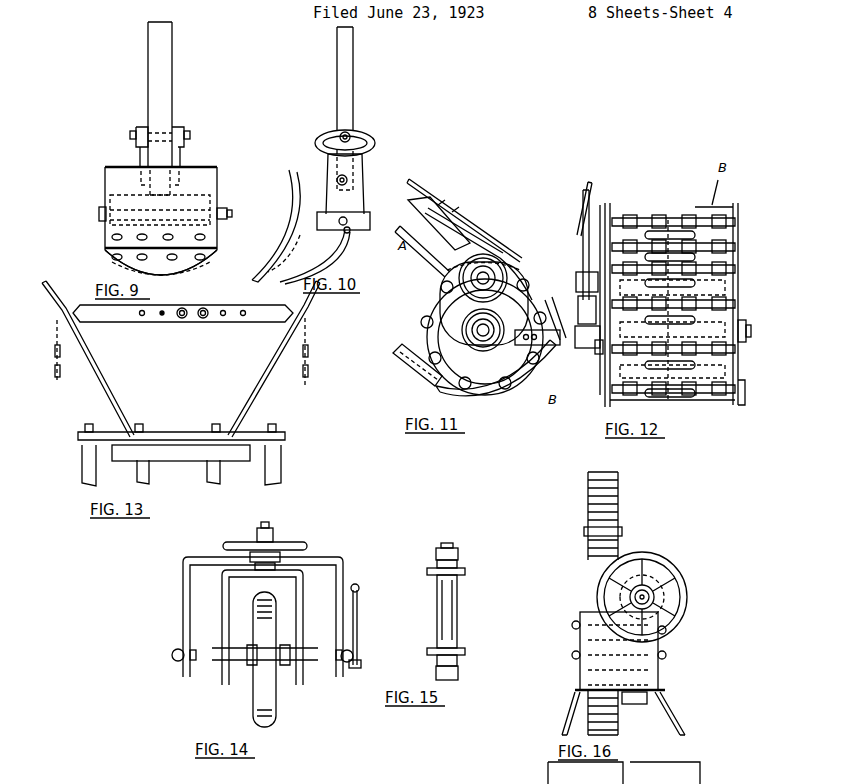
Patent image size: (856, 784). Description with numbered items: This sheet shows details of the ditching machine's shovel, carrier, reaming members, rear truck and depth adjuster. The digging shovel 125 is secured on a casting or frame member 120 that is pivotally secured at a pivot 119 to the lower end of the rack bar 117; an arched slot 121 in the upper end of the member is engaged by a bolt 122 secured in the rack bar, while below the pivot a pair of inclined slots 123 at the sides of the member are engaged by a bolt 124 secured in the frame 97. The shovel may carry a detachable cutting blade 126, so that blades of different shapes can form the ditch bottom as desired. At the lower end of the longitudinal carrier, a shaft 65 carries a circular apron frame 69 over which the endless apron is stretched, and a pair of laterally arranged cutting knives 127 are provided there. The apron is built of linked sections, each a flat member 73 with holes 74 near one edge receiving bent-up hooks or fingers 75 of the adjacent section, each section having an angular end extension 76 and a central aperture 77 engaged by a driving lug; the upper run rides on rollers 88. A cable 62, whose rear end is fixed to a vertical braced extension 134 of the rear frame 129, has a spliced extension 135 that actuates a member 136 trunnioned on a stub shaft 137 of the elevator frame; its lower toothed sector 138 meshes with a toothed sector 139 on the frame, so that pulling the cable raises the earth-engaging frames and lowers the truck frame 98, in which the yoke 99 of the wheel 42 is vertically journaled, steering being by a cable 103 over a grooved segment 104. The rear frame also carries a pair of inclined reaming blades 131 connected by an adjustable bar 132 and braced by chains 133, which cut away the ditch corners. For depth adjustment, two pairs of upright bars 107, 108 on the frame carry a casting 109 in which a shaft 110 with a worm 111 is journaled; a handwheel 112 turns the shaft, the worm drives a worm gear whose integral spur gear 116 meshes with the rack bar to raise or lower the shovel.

In FIG. 9, the rack bar 117 is at (163, 88).
In FIG. 10, the rack bar 117 is at (346, 88).
In FIG. 16, the rack bar 117 is at (608, 512).
In FIG. 9, the casting or frame member 120 is at (181, 156).
In FIG. 10, the casting or frame member 120 is at (360, 192).
In FIG. 9, the bolt 122 is at (190, 135).
In FIG. 10, the bolt 122 is at (350, 135).
In FIG. 9, the pivot 119 is at (199, 171).
In FIG. 10, the pivot 119 is at (347, 179).
In FIG. 9, the digging shovel 125 is at (207, 187).
In FIG. 10, the digging shovel 125 is at (300, 180).
In FIG. 9, the frame 97 is at (100, 222).
In FIG. 10, the frame 97 is at (362, 218).
In FIG. 11, the frame 97 is at (552, 346).
In FIG. 12, the frame 97 is at (598, 352).
In FIG. 14, the frame 97 is at (192, 665).
In FIG. 9, the bolt 124 is at (224, 218).
In FIG. 10, the bolt 124 is at (343, 236).
In FIG. 9, the detachable cutting blade 126 is at (205, 257).
In FIG. 10, the detachable cutting blade 126 is at (270, 270).
In FIG. 10, the arched slot 121 is at (368, 142).
In FIG. 10, the inclined slots 123 is at (346, 225).
In FIG. 10, the angular end extension 76 is at (405, 232).
In FIG. 11, the angular end extension 76 is at (405, 232).
In FIG. 12, the angular end extension 76 is at (738, 210).
In FIG. 11, the circular apron frame 69 is at (445, 337).
In FIG. 12, the circular apron frame 69 is at (742, 320).
In FIG. 11, the stub shaft 137 is at (468, 278).
In FIG. 12, the stub shaft 137 is at (576, 275).
In FIG. 11, the lower toothed sector 138 is at (462, 292).
In FIG. 12, the lower toothed sector 138 is at (578, 300).
In FIG. 13, the lower toothed sector 138 is at (275, 475).
In FIG. 11, the toothed sector 139 is at (466, 318).
In FIG. 12, the toothed sector 139 is at (575, 330).
In FIG. 11, the cable 62 is at (408, 186).
In FIG. 12, the cable 62 is at (590, 180).
In FIG. 14, the cable 62 is at (359, 586).
In FIG. 11, the spliced extension 135 is at (488, 232).
In FIG. 12, the spliced extension 135 is at (592, 205).
In FIG. 11, the member 136 is at (512, 268).
In FIG. 12, the member 136 is at (615, 220).
In FIG. 11, the shaft 65 is at (420, 376).
In FIG. 12, the shaft 65 is at (751, 322).
In FIG. 12, the flat member 73 is at (735, 235).
In FIG. 12, the central aperture 77 is at (670, 225).
In FIG. 12, the holes 74 is at (630, 215).
In FIG. 12, the cutters or cutting knives 127 is at (745, 378).
In FIG. 12, the hooks or fingers 75 is at (700, 405).
In FIG. 13, the adjustable bar 132 is at (218, 322).
In FIG. 13, the inclined reaming blades 131 is at (250, 387).
In FIG. 13, the chains 133 is at (60, 376).
In FIG. 13, the rear or secondary frame 129 is at (185, 452).
In FIG. 14, the rear or secondary frame 129 is at (178, 662).
In FIG. 14, the truck frame 98 is at (345, 562).
In FIG. 14, the yoke 99 is at (303, 610).
In FIG. 14, the wheel 42 is at (276, 718).
In FIG. 14, the cable 103 is at (305, 546).
In FIG. 14, the grooved segment 104 is at (272, 540).
In FIG. 14, the vertical braced extension 134 is at (358, 630).
In FIG. 15, the rollers 88 is at (457, 612).
In FIG. 16, the handwheel 112 is at (688, 604).
In FIG. 16, the shaft 110 is at (660, 590).
In FIG. 16, the worm 111 is at (652, 586).
In FIG. 16, the casting 109 is at (660, 667).
In FIG. 16, the upright bars 108 is at (565, 705).
In FIG. 16, the upright bars 107 is at (568, 728).
In FIG. 16, the spur gear 116 is at (580, 697).